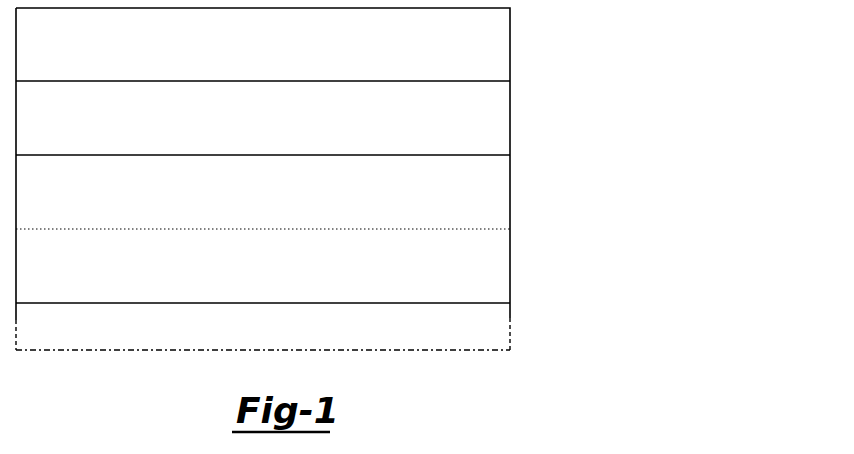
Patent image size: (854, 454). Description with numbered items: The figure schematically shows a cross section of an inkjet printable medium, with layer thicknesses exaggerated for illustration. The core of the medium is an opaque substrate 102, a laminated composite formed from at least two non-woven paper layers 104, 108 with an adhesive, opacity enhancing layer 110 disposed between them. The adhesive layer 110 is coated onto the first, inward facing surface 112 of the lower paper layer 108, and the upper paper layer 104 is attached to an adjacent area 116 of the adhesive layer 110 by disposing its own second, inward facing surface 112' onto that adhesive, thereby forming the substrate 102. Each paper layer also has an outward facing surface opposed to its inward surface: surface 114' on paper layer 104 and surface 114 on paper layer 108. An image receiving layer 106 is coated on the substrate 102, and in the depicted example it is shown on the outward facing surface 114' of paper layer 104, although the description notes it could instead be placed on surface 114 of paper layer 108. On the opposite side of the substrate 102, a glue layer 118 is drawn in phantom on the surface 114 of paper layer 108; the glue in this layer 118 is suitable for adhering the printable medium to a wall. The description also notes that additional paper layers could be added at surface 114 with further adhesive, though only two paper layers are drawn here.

The opaque substrate 102 is at (586, 82).
The non-woven paper layer 104 is at (497, 118).
The image receiving layer 106 is at (497, 47).
The non-woven paper layer 108 is at (497, 266).
The adhesive, opacity enhancing layer 110 is at (497, 191).
The first inward facing surface 112 is at (338, 238).
The second inward facing surface 112' is at (383, 145).
The outward facing surface 114 is at (294, 300).
The outward facing surface 114' is at (191, 91).
The adjacent area of adhesive layer 116 is at (130, 154).
The glue layer 118 is at (60, 352).